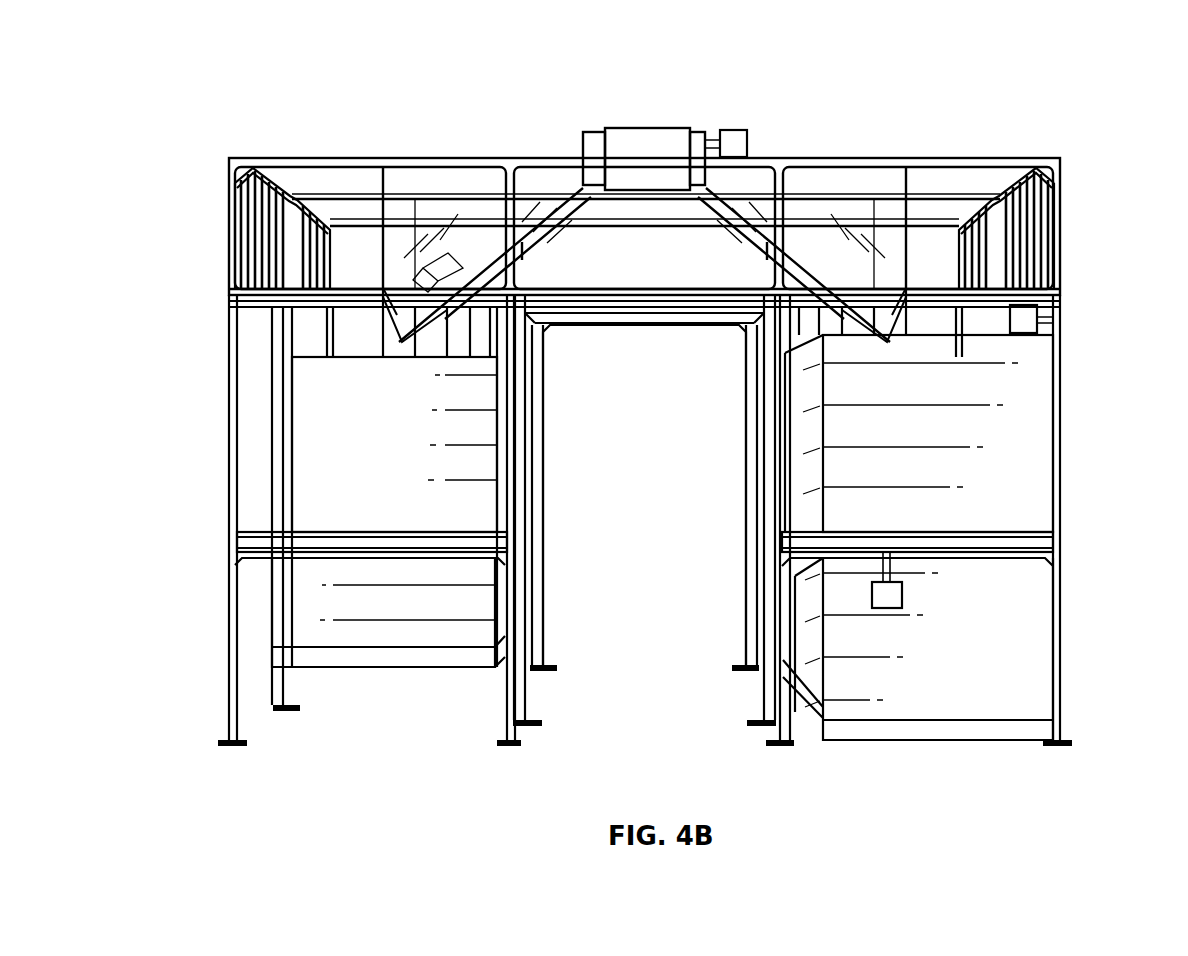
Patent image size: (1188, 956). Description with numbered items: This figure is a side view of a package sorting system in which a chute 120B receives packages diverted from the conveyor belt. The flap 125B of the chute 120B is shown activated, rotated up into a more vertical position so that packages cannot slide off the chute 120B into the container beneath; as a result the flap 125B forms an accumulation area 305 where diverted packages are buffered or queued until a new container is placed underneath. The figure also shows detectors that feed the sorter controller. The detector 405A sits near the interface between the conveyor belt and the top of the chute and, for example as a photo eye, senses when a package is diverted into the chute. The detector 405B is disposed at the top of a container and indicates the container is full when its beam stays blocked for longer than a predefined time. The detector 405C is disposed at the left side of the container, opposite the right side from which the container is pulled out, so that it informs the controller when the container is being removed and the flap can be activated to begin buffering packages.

The chute 120B is at (547, 130).
The accumulation area 305 is at (443, 216).
The flap 125B is at (385, 285).
The detector 405A is at (735, 128).
The detector 405B is at (1053, 319).
The detector 405C is at (887, 608).